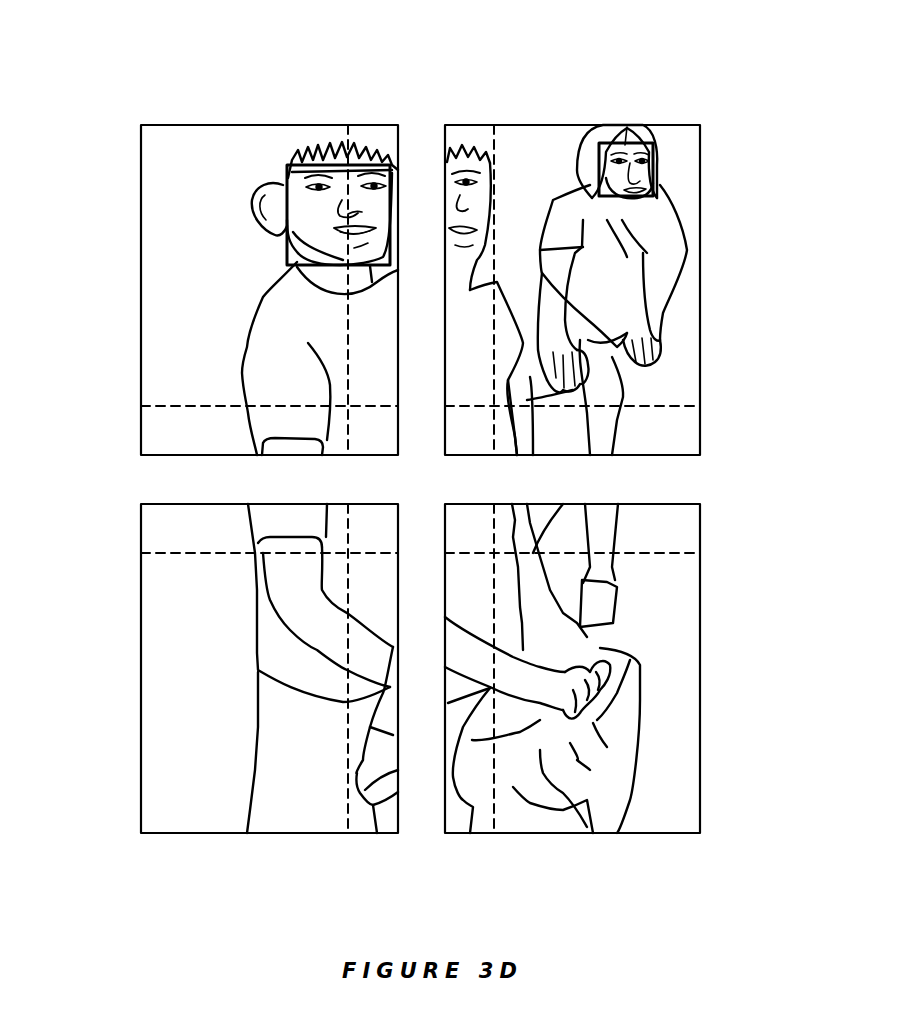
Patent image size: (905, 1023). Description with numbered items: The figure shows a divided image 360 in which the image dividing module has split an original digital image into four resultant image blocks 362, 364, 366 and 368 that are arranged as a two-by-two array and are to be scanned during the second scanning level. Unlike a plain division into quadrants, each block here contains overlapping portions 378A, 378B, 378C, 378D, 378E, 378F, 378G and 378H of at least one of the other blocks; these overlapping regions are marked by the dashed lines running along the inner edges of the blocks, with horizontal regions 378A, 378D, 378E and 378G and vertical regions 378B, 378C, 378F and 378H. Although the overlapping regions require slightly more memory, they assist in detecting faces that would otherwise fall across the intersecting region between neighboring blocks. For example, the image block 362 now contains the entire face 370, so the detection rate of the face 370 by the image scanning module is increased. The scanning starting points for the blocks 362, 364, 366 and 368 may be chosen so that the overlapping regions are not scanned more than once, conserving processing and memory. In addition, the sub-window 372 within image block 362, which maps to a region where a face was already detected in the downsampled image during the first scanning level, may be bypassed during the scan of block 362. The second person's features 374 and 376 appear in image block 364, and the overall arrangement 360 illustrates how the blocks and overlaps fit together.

The set of captured image frames 360 is at (658, 85).
The image block 362 is at (192, 292).
The image block 364 is at (673, 350).
The image block 366 is at (182, 680).
The image block 368 is at (673, 680).
The face 370 is at (268, 207).
The sub-window 372 is at (317, 220).
The eyes of second person 374 is at (638, 162).
The face of second person 376 is at (657, 185).
The overlapping portion 378A is at (175, 437).
The overlapping portion 378B is at (373, 132).
The overlapping portion 378C is at (470, 128).
The overlapping portion 378D is at (660, 438).
The overlapping portion 378E is at (175, 529).
The overlapping portion 378F is at (373, 833).
The overlapping portion 378G is at (660, 529).
The overlapping portion 378H is at (468, 832).